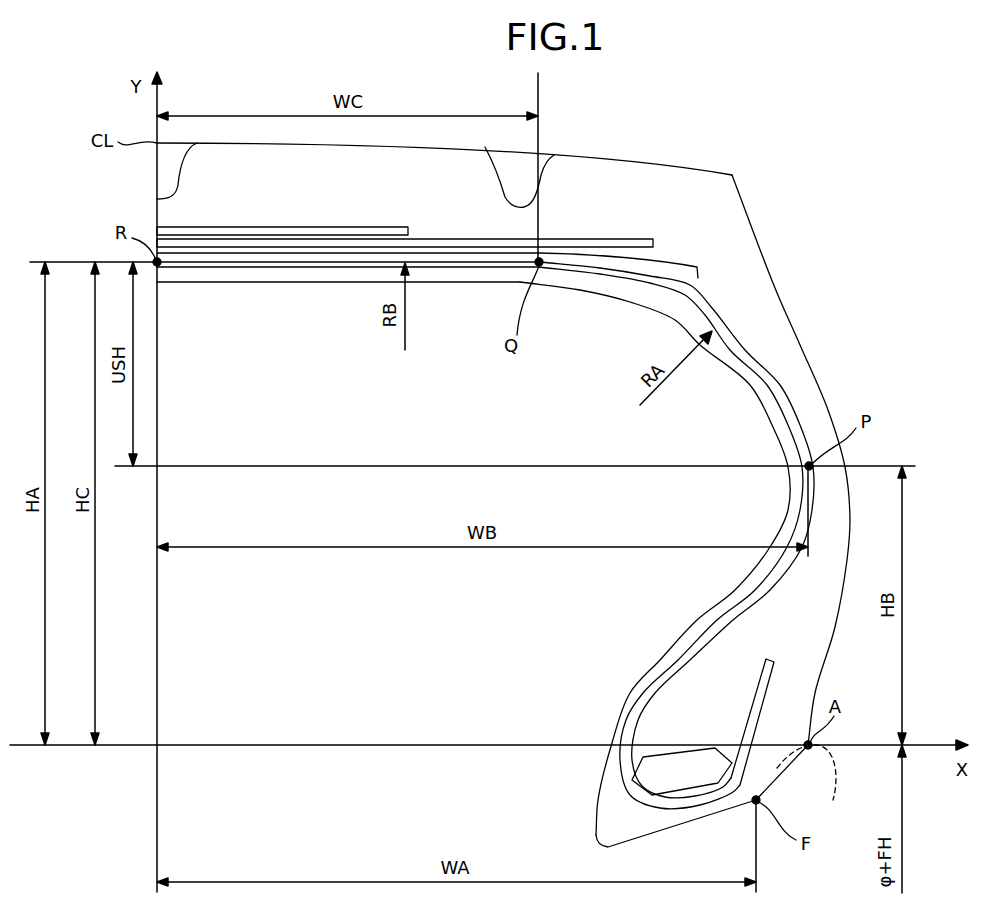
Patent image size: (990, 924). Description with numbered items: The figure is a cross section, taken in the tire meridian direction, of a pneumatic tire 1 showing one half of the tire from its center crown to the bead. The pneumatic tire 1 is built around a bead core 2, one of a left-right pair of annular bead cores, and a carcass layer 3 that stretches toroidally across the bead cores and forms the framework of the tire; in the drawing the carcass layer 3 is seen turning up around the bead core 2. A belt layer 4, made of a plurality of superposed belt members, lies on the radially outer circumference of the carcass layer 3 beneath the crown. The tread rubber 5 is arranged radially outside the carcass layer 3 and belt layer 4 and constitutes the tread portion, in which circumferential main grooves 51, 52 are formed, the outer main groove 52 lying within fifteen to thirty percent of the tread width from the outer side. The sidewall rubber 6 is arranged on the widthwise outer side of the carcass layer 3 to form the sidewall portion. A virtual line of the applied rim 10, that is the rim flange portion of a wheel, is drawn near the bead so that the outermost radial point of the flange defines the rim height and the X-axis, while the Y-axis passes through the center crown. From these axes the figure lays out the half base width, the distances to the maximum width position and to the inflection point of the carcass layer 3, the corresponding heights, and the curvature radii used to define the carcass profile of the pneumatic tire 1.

The pneumatic tire 1 is at (795, 170).
The bead core 2 is at (655, 773).
The carcass layer 3 is at (703, 642).
The belt layer 4 is at (710, 232).
The tread rubber 5 is at (590, 166).
The sidewall rubber 6 is at (814, 398).
The applied rim 10 is at (807, 782).
The main groove 51 is at (178, 157).
The main groove 52 is at (512, 163).